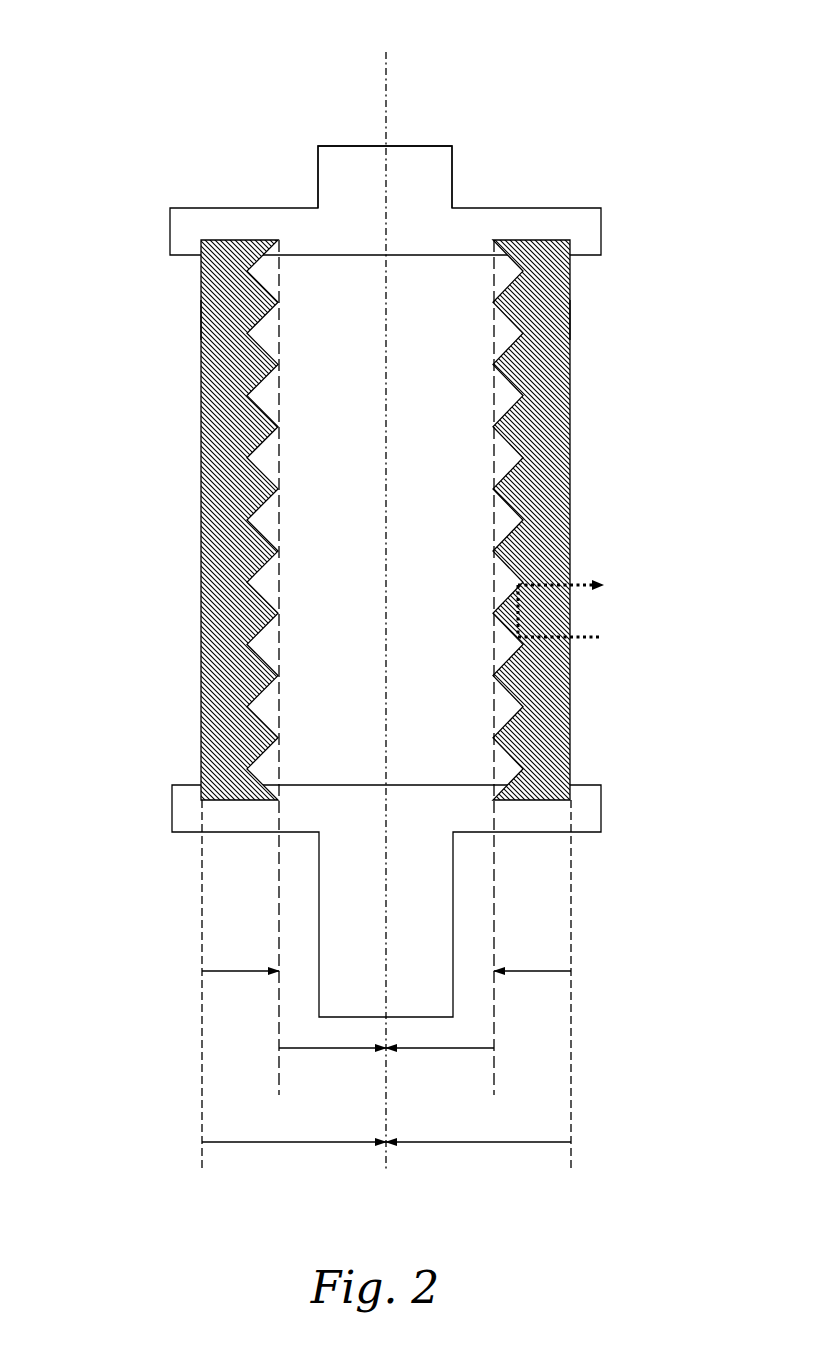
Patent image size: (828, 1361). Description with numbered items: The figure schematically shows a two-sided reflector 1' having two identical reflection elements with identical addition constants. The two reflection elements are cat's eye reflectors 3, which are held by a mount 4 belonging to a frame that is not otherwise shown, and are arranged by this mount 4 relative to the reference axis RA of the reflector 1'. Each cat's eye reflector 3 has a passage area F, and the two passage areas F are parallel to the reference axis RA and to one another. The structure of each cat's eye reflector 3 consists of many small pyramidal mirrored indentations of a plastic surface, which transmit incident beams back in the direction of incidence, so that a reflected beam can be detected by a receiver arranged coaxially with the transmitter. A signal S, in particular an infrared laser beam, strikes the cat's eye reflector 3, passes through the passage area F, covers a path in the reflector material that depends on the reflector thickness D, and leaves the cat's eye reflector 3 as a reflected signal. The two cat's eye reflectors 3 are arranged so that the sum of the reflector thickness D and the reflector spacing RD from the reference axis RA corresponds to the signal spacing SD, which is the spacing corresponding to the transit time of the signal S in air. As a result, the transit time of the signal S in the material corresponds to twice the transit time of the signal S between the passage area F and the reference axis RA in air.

The two-sided reflector 1' is at (338, 544).
The cat's eye reflector 3 is at (379, 520).
The mount 4 is at (439, 170).
The passage area F is at (384, 313).
The signal S is at (561, 628).
The reference axis RA is at (377, 585).
The reflector thickness D is at (386, 988).
The reflector spacing RD is at (386, 1073).
The signal spacing SD is at (386, 1165).